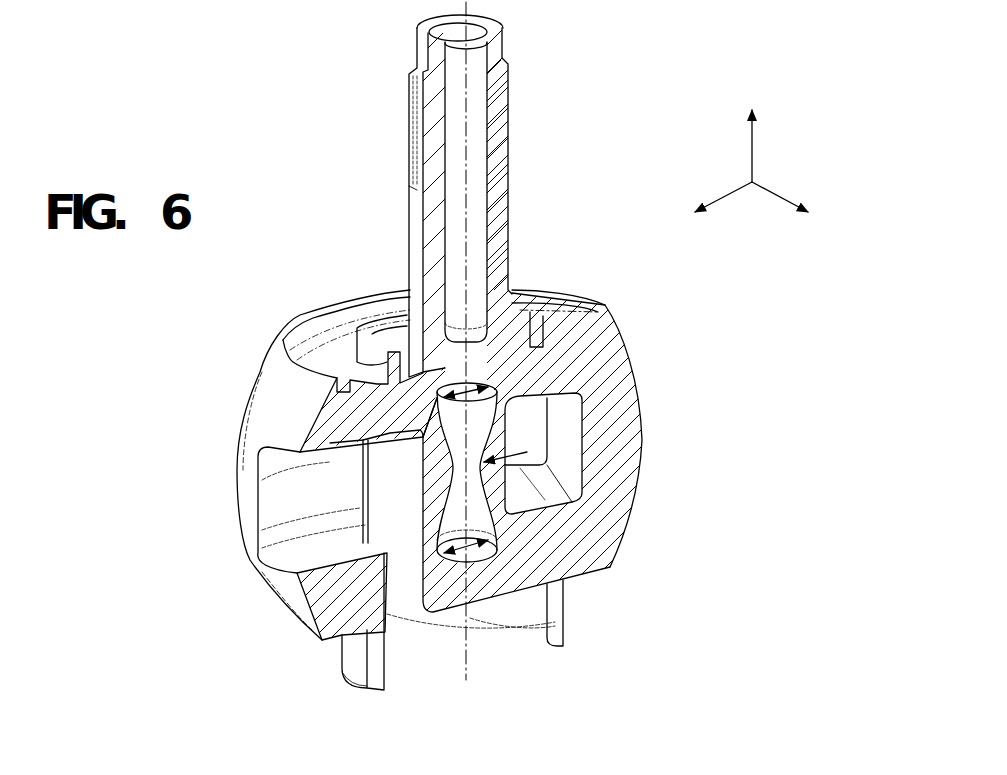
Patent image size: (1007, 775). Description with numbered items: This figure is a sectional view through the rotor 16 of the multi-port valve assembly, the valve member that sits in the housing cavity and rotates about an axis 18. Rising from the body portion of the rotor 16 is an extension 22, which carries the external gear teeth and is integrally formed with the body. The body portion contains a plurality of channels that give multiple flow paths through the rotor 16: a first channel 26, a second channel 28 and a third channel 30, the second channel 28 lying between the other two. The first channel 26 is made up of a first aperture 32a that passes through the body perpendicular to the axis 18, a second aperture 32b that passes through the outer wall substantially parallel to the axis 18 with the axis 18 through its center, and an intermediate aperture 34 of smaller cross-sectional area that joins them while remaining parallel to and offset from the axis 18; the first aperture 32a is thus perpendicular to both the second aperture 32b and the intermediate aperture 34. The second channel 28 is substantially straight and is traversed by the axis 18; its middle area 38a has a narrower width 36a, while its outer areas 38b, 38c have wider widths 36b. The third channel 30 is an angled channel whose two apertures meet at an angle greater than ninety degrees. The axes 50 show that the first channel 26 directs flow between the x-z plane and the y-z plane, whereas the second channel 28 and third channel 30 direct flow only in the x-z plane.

The rotor 16 is at (603, 345).
The axis 18 is at (488, 94).
The extension 22 is at (500, 204).
The first channel 26 is at (274, 518).
The second channel 28 is at (470, 515).
The third channel 30 is at (558, 428).
The first aperture 32a is at (273, 486).
The second aperture 32b is at (540, 622).
The intermediate aperture 34 is at (406, 584).
The width 36a is at (446, 473).
The width 36b is at (486, 387).
The middle area 38a is at (443, 453).
The outer area 38b is at (501, 369).
The outer area 38c is at (478, 570).
The axes 50 is at (695, 127).